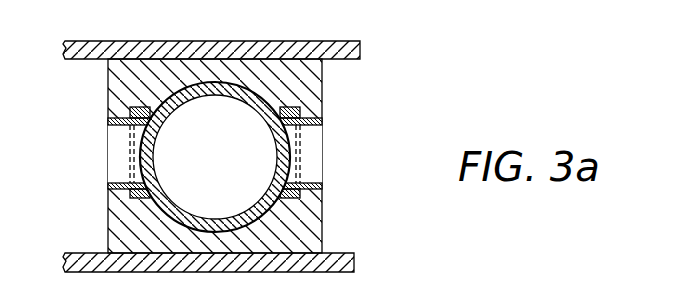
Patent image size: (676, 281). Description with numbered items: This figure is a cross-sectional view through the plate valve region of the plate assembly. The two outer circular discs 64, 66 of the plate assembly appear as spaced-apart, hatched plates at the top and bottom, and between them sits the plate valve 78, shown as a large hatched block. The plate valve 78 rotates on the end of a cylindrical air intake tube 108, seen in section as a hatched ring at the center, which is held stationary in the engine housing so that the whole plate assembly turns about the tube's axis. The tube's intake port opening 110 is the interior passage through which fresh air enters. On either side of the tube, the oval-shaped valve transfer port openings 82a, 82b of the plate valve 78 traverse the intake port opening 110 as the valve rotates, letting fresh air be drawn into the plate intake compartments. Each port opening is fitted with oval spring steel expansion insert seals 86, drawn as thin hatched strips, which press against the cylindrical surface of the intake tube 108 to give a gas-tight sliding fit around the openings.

The outer circular disc 64 is at (87, 48).
The outer circular disc 66 is at (88, 253).
The plate valve 78 is at (318, 100).
The valve transfer port opening 82a is at (310, 165).
The valve transfer port opening 82b is at (115, 157).
The spring steel expansion insert seal 86 is at (108, 121).
The air intake tube 108 is at (172, 197).
The intake port opening 110 is at (263, 108).